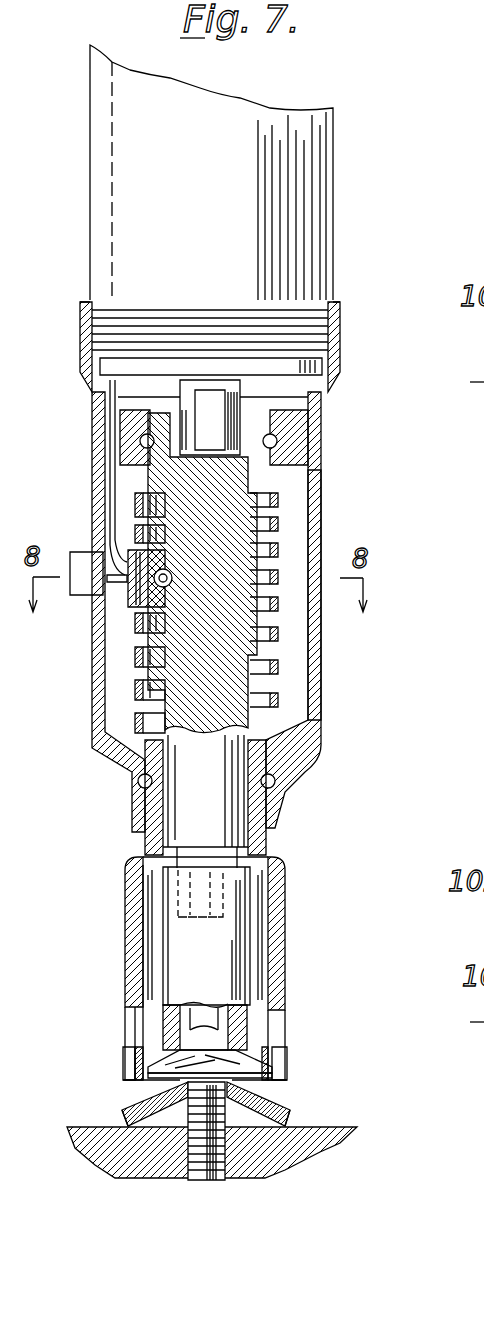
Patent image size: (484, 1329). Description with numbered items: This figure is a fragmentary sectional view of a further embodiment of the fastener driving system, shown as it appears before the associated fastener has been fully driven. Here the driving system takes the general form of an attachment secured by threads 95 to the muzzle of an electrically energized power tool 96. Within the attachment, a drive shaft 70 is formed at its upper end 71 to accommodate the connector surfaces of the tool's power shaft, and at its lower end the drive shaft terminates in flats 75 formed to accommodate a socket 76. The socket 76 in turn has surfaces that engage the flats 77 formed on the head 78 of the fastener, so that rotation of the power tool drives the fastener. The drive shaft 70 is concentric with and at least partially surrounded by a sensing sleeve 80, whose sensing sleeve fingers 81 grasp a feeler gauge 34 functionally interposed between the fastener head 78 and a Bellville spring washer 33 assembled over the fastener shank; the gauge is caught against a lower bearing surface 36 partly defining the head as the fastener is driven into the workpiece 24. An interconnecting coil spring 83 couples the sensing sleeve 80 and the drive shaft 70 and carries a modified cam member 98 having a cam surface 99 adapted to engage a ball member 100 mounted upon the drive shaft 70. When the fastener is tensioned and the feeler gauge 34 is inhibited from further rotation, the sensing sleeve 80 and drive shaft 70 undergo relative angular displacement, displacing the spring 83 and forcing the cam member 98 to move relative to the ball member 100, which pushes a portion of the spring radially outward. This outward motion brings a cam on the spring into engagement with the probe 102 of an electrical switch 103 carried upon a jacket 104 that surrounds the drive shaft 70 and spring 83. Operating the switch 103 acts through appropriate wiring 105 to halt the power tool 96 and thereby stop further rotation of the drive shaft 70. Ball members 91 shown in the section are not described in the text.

The power tool 96 is at (318, 165).
The threads 95 is at (308, 328).
The wiring 105 is at (100, 458).
The balls 91 is at (282, 440).
The upper end 71 is at (213, 410).
The drive shaft 70 is at (254, 527).
The jacket 104 is at (318, 533).
The interconnecting coil spring 83 is at (282, 640).
The cam member 98 is at (140, 612).
The cam surface 99 is at (160, 583).
The ball member 100 is at (155, 585).
The probe 102 is at (118, 535).
The electrical switch 103 is at (85, 568).
The flats 75 is at (242, 853).
The sensing sleeve 80 is at (128, 905).
The socket 76 is at (233, 932).
The flats 77 is at (172, 1024).
The head 78 is at (242, 1068).
The sensing sleeve fingers 81 is at (127, 1066).
The feeler gauge 34 is at (265, 1100).
The Bellville spring washer 33 is at (287, 1118).
The workpiece 24 is at (285, 1160).
The lower bearing surface 36 is at (213, 1162).